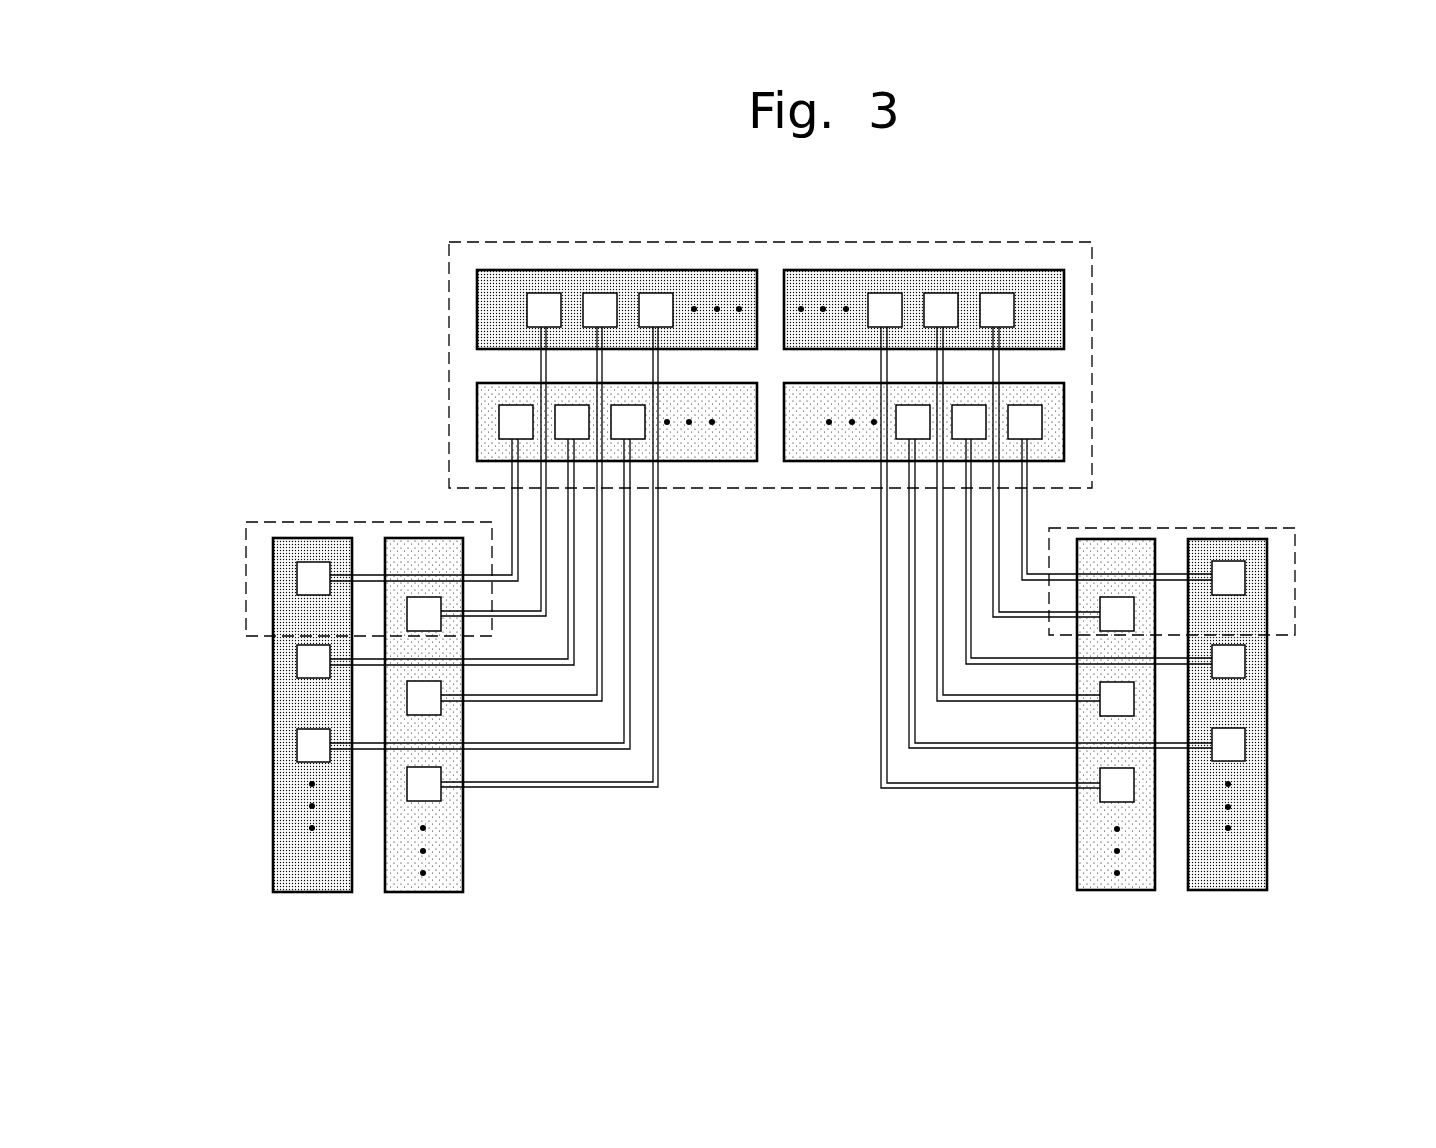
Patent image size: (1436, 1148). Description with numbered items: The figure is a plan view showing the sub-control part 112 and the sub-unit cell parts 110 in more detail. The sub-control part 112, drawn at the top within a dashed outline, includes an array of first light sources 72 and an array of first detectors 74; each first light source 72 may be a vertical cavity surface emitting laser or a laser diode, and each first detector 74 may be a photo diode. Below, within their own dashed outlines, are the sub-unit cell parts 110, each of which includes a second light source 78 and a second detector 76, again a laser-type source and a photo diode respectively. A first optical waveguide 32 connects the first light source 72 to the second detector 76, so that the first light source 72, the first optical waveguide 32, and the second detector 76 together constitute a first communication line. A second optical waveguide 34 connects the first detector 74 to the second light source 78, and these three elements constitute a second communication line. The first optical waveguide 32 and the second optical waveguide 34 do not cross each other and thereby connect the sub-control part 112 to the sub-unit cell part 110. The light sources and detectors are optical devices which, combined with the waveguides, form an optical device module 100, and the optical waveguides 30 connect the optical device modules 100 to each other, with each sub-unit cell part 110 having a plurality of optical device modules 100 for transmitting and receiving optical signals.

The sub-control part 112 is at (958, 242).
The optical device module 100 is at (1003, 288).
The first light source 72 is at (1010, 308).
The first detector 74 is at (1037, 420).
The optical waveguides 30 is at (1163, 437).
The first optical waveguide 32 is at (998, 498).
The second optical waveguide 34 is at (1028, 503).
The sub-unit cell part 110 is at (318, 522).
The second light source 78 is at (1238, 577).
The second detector 76 is at (1127, 618).